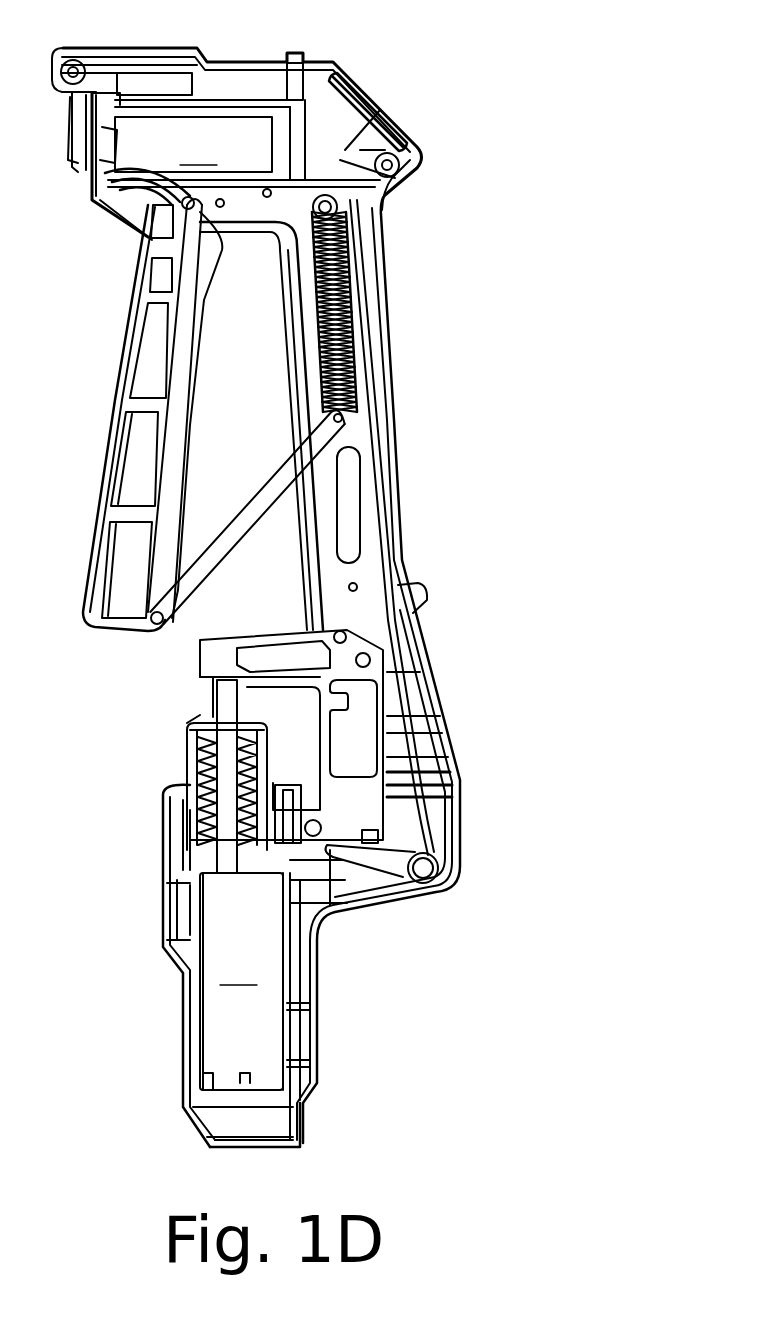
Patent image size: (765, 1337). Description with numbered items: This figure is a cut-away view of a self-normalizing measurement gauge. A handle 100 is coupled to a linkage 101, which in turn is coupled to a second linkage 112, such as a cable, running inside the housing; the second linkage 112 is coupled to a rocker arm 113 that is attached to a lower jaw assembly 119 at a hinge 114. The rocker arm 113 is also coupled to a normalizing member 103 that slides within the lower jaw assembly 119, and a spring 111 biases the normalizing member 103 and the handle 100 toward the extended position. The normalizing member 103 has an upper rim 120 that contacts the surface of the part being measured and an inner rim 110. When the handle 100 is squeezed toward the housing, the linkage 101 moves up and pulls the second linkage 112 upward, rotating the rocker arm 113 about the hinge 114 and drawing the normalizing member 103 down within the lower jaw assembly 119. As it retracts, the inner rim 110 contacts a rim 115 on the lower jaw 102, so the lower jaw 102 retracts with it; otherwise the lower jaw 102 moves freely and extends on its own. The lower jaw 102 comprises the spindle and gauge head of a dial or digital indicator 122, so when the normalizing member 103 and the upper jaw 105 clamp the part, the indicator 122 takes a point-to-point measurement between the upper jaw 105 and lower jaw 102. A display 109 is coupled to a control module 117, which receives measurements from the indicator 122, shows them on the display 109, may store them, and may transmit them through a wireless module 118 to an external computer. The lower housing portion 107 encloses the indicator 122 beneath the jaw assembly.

The handle 100 is at (107, 453).
The linkage 101 is at (273, 470).
The lower jaw 102 is at (200, 750).
The normalizing member 103 is at (190, 777).
The upper jaw 105 is at (237, 687).
The housing 107 is at (310, 997).
The display 109 is at (373, 100).
The inner rim 110 is at (213, 723).
The spring 111 is at (200, 823).
The second linkage 112 is at (453, 843).
The rocker arm 113 is at (423, 890).
The hinge 114 is at (323, 803).
The rim 115 is at (257, 743).
The control module 117 is at (193, 144).
The wireless module 118 is at (116, 50).
The lower jaw assembly 119 is at (163, 843).
The upper rim 120 is at (187, 720).
The indicator 122 is at (241, 981).